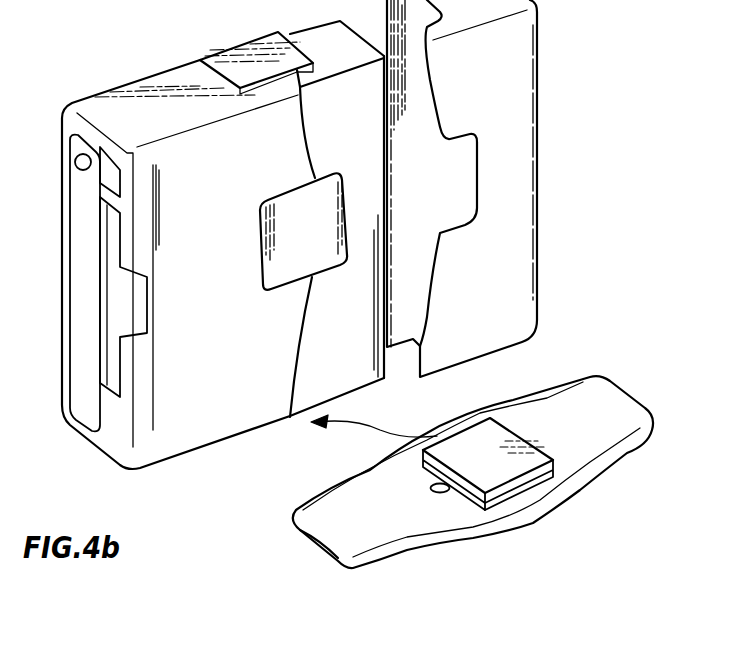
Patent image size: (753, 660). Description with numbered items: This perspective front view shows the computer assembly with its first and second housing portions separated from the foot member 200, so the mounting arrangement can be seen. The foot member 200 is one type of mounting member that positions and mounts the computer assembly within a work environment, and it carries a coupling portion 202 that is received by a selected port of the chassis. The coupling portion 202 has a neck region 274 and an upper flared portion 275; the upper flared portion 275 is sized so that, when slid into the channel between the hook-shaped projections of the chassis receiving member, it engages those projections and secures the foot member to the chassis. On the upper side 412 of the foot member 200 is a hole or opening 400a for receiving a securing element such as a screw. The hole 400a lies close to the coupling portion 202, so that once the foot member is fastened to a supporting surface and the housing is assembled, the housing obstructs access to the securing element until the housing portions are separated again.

The foot member 200 is at (533, 523).
The coupling portion 202 is at (510, 430).
The neck region 274 is at (423, 472).
The upper flared portion 275 is at (557, 467).
The upper side 412 is at (347, 538).
The hole or opening 400a is at (440, 493).